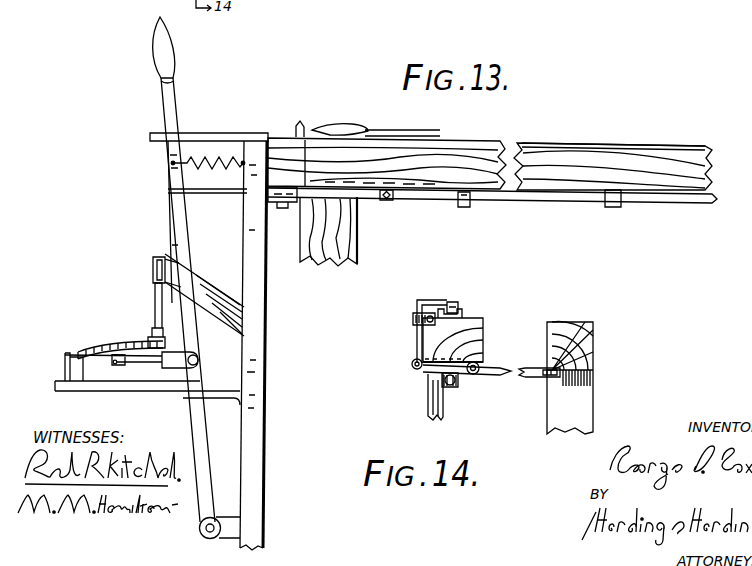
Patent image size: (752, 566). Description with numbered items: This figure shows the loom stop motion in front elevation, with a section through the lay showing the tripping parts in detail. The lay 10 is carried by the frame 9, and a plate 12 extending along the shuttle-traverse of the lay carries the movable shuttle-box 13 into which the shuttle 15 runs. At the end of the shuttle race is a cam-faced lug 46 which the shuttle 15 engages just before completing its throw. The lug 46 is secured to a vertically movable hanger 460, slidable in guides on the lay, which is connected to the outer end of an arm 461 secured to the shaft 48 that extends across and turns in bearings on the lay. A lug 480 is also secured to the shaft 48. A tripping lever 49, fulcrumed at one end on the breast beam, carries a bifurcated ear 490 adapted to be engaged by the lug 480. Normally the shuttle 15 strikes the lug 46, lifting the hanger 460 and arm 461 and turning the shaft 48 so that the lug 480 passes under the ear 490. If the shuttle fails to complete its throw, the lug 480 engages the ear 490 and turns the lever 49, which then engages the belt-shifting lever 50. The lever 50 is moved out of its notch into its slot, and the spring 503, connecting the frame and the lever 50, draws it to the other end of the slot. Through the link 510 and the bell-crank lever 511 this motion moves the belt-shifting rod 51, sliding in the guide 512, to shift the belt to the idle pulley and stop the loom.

In FIG. 13, the frame 9 is at (267, 385).
In FIG. 14, the frame 9 is at (578, 345).
In FIG. 13, the lay 10 is at (551, 162).
In FIG. 14, the lay 10 is at (440, 338).
In FIG. 13, the plate 12 is at (637, 145).
In FIG. 14, the movable shuttle-box 13 is at (465, 313).
In FIG. 13, the shuttle 15 is at (412, 133).
In FIG. 13, the cam-faced lug 46 is at (297, 130).
In FIG. 14, the cam-faced lug 46 is at (458, 305).
In FIG. 13, the shaft 48 is at (572, 202).
In FIG. 14, the shaft 48 is at (480, 364).
In FIG. 13, the tripping lever 49 is at (221, 196).
In FIG. 13, the belt-shifting lever 50 is at (165, 101).
In FIG. 13, the belt-shifting rod 51 is at (154, 298).
In FIG. 14, the hanger 460 is at (417, 300).
In FIG. 14, the arm 461 is at (424, 368).
In FIG. 14, the lug 480 is at (494, 377).
In FIG. 13, the ear 490 is at (391, 203).
In FIG. 14, the ear 490 is at (533, 378).
In FIG. 13, the spring 503 is at (214, 160).
In FIG. 13, the link 510 is at (150, 364).
In FIG. 13, the bell-crank lever 511 is at (107, 340).
In FIG. 13, the guide 512 is at (157, 257).